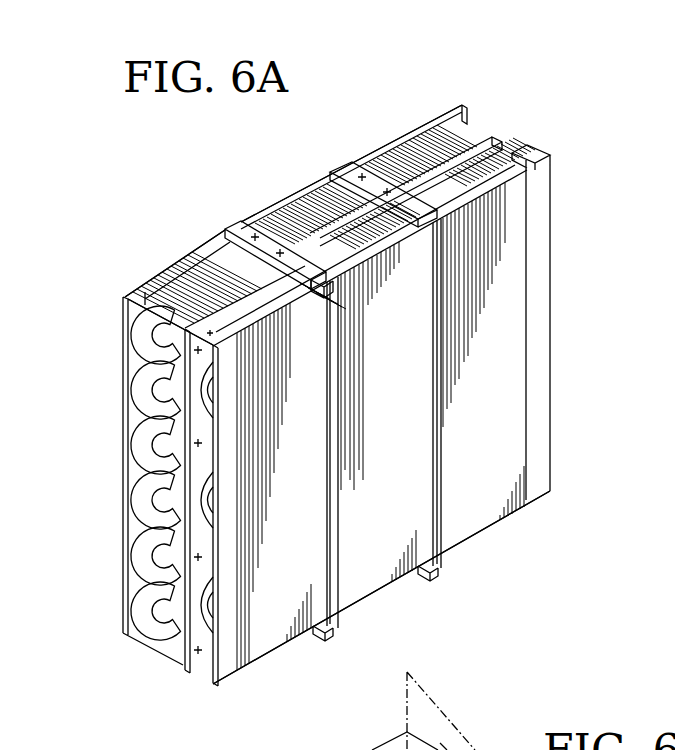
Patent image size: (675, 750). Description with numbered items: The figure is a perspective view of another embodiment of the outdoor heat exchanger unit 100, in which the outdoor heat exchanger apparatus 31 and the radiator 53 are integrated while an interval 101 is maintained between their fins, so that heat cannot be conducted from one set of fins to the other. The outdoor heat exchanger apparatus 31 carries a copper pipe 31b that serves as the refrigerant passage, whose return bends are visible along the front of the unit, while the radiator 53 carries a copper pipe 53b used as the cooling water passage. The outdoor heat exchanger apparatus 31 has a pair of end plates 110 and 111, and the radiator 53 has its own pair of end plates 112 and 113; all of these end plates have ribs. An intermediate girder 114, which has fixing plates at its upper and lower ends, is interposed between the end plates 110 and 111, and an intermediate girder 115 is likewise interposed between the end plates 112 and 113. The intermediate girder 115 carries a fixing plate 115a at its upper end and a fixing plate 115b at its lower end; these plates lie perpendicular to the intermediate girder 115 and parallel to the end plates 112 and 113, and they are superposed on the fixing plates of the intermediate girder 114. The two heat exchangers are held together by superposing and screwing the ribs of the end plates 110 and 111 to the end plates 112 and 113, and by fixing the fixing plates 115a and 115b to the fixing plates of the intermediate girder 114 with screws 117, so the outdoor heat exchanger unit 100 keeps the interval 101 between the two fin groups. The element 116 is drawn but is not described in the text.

The outdoor heat exchanger unit 100 is at (426, 108).
The interval 101 is at (490, 156).
The end plate 110 is at (180, 630).
The end plate 111 is at (464, 132).
The end plate 112 is at (144, 300).
The end plate 113 is at (534, 156).
The intermediate girder 114 is at (232, 250).
The intermediate girder 115 is at (338, 428).
The fixing plate 115a is at (308, 236).
The fixing plate 115b is at (323, 641).
The fastening strip 116 is at (199, 662).
The screw 117 is at (258, 232).
The outdoor heat exchanger apparatus 31 is at (197, 267).
The copper pipe 31b is at (129, 400).
The radiator 53 is at (378, 578).
The copper pipe 53b is at (203, 483).